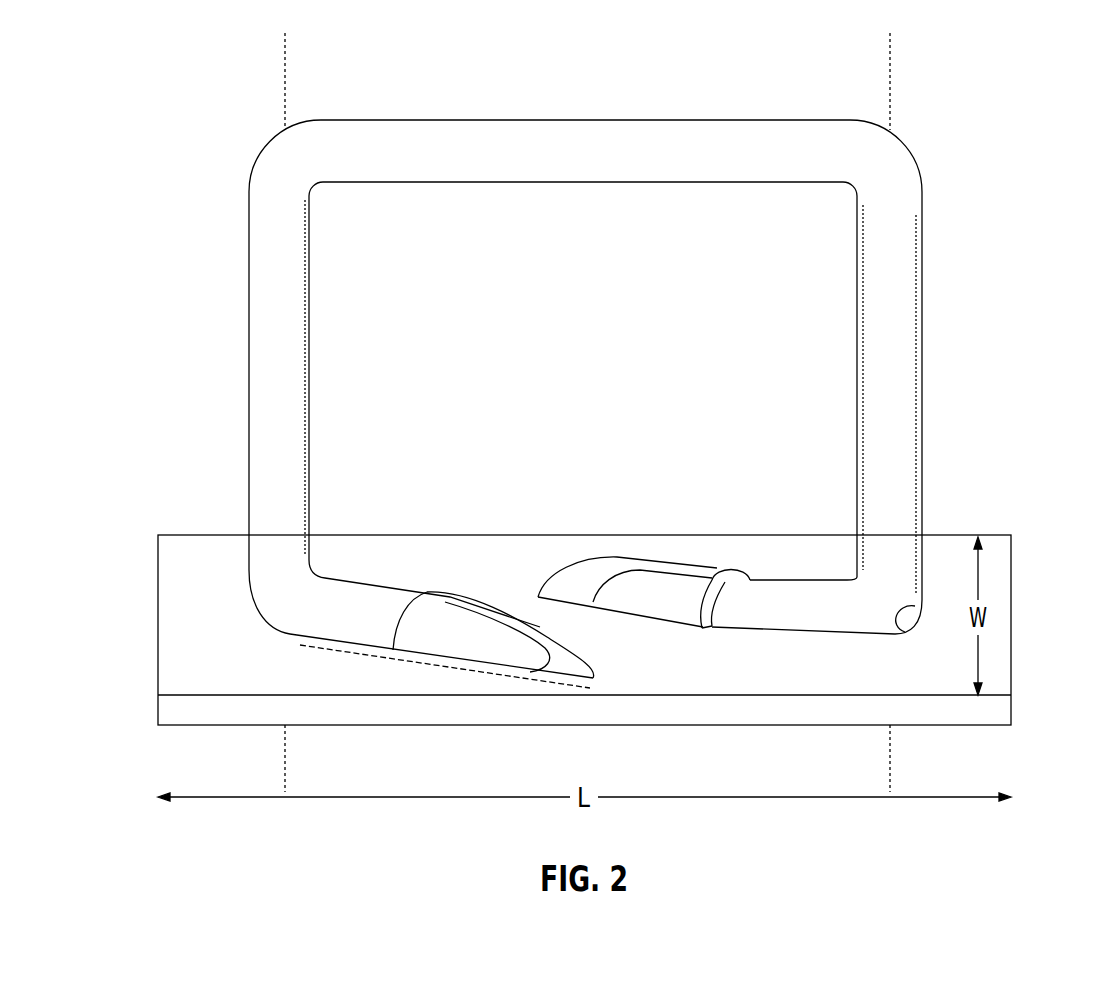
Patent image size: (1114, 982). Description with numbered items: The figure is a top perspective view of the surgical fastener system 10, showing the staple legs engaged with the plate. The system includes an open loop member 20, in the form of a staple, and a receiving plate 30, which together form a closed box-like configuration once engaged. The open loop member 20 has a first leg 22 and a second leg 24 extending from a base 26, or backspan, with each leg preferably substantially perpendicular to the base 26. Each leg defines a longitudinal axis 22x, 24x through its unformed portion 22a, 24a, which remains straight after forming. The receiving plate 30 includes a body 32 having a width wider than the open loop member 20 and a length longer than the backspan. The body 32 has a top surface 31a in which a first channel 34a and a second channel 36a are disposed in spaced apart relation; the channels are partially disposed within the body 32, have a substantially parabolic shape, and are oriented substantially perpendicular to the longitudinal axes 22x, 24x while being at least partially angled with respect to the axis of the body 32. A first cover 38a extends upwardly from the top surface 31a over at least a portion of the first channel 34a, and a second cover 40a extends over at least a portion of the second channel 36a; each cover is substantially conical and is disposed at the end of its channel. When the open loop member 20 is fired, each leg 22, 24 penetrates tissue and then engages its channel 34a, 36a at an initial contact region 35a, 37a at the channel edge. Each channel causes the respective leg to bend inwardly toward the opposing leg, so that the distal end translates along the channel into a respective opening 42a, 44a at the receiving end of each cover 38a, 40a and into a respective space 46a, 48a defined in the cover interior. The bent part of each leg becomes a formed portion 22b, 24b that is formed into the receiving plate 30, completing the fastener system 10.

The surgical fastener system 10 is at (160, 110).
The open loop member 20 is at (972, 234).
The first leg 22 is at (249, 338).
The unformed portion of first leg 22a is at (309, 338).
The formed portion of first leg 22b is at (455, 622).
The longitudinal axis of first leg 22x is at (285, 78).
The second leg 24 is at (922, 338).
The unformed portion of second leg 24a is at (857, 338).
The formed portion of second leg 24b is at (682, 592).
The longitudinal axis of second leg 24x is at (890, 78).
The base 26 is at (598, 120).
The receiving plate 30 is at (1040, 617).
The top surface 31a is at (180, 670).
The body 32 is at (920, 678).
The first channel 34a is at (262, 630).
The initial contact region 35a is at (262, 617).
The second channel 36a is at (742, 632).
The initial contact region 37a is at (917, 610).
The first cover 38a is at (568, 658).
The second cover 40a is at (593, 570).
The opening 42a is at (378, 650).
The opening 44a is at (725, 568).
The space 46a is at (463, 647).
The space 48a is at (670, 577).